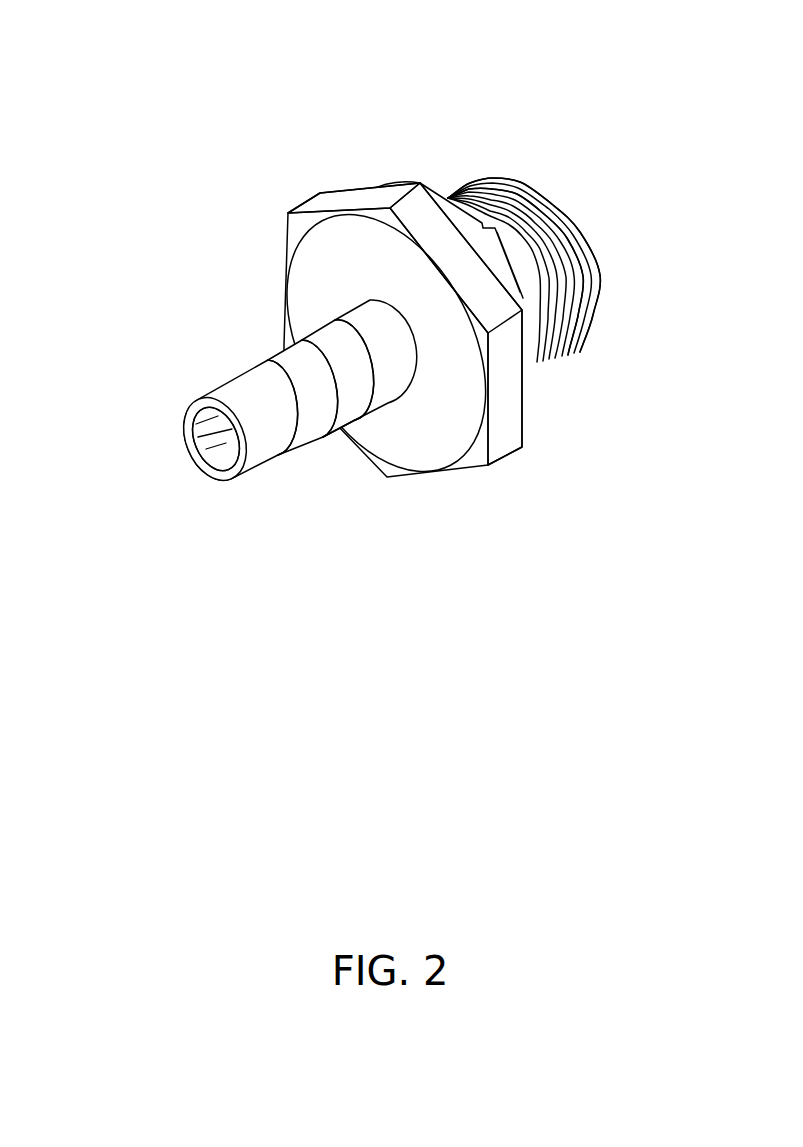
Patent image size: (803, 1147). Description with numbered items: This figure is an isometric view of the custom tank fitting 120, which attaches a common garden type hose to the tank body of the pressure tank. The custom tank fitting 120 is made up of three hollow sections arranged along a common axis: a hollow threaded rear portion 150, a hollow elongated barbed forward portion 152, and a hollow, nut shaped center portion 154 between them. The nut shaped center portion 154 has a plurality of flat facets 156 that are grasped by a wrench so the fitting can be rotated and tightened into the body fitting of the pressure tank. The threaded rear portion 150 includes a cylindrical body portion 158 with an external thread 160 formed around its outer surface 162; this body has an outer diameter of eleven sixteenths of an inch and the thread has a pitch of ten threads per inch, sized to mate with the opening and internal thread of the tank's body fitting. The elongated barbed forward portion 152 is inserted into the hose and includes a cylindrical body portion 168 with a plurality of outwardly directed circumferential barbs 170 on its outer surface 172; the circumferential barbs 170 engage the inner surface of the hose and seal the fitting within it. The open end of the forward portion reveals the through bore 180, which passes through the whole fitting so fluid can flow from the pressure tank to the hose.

The custom tank fitting 120 is at (151, 27).
The threaded rear portion 150 is at (492, 168).
The elongated barbed forward portion 152 is at (254, 482).
The nut shaped center portion 154 is at (276, 243).
The flat facets 156 is at (337, 207).
The cylindrical body portion 158 is at (600, 285).
The external thread 160 is at (572, 345).
The outer surface 162 is at (560, 247).
The cylindrical body portion 168 is at (193, 420).
The circumferential barbs 170 is at (334, 320).
The outer surface 172 is at (336, 444).
The through bore 180 is at (215, 447).